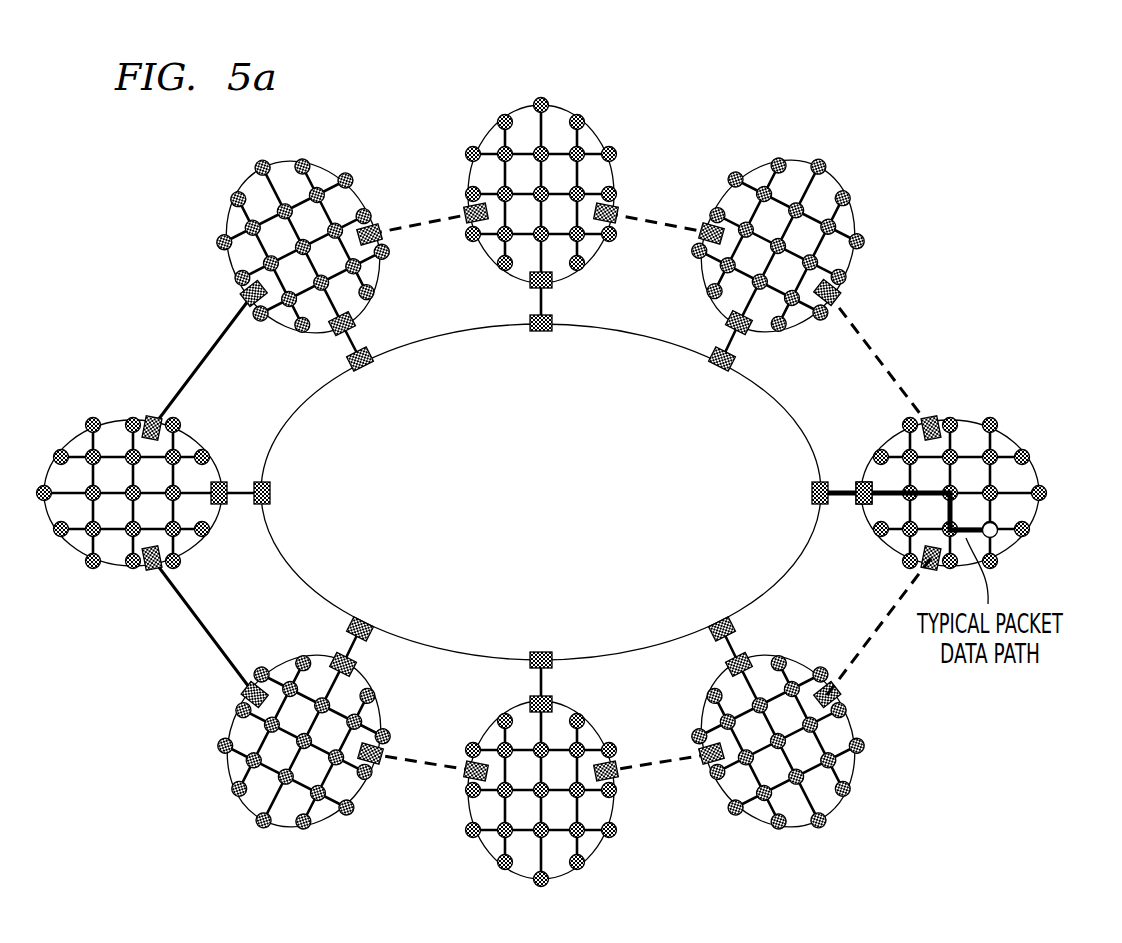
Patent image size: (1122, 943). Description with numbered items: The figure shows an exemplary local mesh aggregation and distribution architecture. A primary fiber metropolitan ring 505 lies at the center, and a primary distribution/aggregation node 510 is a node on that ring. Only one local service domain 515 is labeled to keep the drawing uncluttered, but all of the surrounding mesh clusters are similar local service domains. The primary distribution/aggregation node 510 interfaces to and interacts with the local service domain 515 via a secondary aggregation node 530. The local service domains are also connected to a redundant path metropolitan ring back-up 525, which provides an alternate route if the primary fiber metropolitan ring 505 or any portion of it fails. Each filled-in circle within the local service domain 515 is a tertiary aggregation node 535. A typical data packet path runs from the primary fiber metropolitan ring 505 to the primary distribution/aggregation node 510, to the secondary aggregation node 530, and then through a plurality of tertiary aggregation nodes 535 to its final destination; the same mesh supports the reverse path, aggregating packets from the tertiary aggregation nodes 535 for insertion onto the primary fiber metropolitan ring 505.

The primary fiber metropolitan ring 505 is at (291, 568).
The primary distribution/aggregation node 510 is at (812, 493).
The local service domain 515 is at (832, 181).
The redundant path metropolitan ring back-up 525 is at (870, 650).
The secondary aggregation node 530 is at (863, 480).
The tertiary aggregation node 535 is at (998, 527).